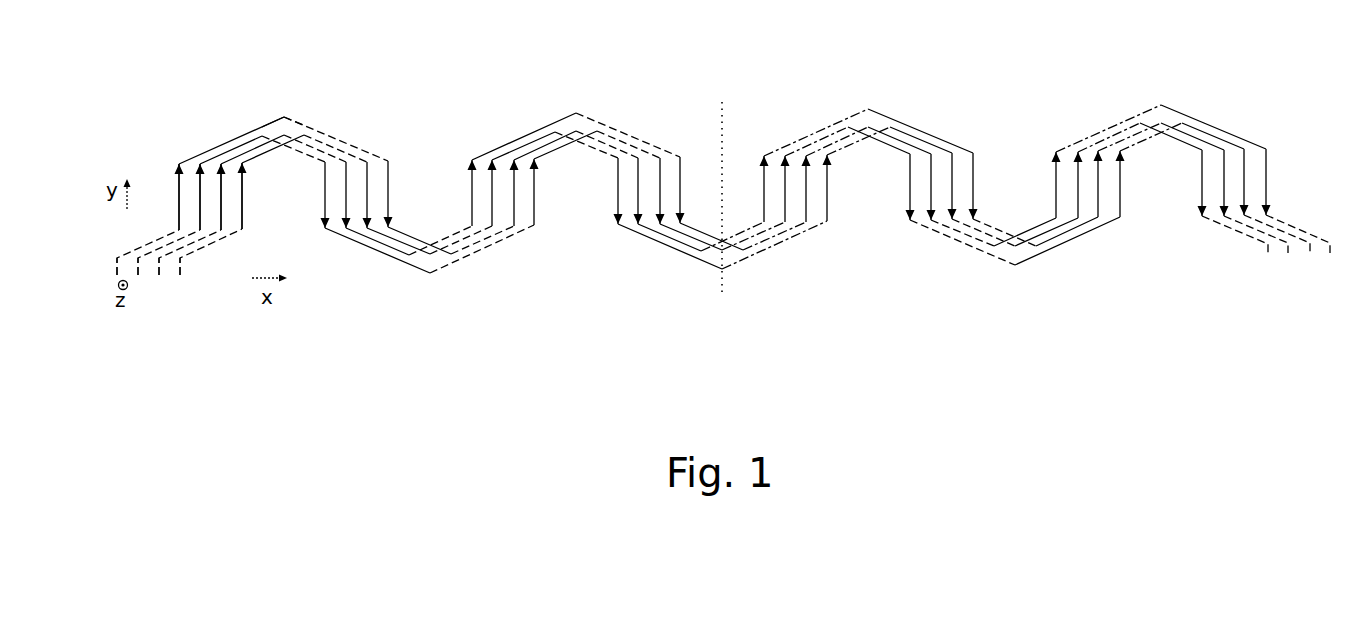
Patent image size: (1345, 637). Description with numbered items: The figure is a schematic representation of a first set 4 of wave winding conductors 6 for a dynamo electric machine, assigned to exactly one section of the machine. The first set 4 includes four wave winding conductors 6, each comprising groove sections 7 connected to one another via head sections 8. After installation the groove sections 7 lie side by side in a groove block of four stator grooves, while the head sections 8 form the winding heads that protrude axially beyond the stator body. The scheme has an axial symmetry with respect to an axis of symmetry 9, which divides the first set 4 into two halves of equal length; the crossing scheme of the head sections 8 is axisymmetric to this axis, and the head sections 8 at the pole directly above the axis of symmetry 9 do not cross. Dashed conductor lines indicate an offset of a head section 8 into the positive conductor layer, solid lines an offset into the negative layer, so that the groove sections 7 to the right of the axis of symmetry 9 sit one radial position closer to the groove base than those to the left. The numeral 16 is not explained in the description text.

The first set of wave winding conductors 4 is at (719, 160).
The head sections 8 is at (250, 130).
The winding head turn 16 is at (283, 117).
The groove sections 7 is at (242, 199).
The wave winding conductors 6 is at (117, 275).
The axis of symmetry 9 is at (722, 103).